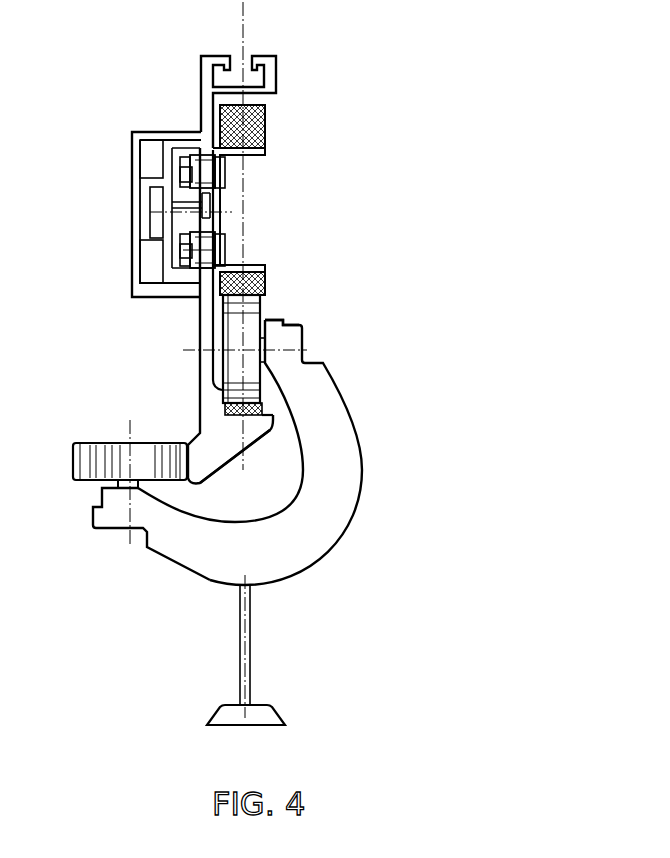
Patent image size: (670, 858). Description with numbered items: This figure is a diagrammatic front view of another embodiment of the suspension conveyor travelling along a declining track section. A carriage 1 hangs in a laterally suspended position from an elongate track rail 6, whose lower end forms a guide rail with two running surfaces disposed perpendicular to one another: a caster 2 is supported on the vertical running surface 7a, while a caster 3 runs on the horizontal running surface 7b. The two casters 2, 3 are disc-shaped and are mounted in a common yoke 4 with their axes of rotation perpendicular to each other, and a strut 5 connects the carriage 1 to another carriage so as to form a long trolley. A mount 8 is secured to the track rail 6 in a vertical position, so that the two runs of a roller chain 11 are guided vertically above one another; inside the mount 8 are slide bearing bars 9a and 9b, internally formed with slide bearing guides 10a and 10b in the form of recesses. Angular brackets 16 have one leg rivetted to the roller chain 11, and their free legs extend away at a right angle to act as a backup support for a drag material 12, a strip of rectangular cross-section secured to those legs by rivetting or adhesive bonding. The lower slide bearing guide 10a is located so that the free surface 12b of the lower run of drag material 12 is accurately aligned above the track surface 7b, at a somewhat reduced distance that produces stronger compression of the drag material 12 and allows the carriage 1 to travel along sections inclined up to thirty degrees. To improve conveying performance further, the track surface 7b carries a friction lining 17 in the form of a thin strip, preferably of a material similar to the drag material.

The carriage 1 is at (360, 528).
The caster 2 is at (98, 458).
The caster 3 is at (237, 340).
The yoke 4 is at (213, 550).
The strut 5 is at (263, 715).
The track rail 6 is at (200, 365).
The running surface 7a is at (188, 443).
The running surface 7b is at (267, 410).
The mount 8 is at (167, 258).
The slide bearing bar 9a is at (200, 235).
The slide bearing bar 9b is at (180, 157).
The slide bearing guide 10a is at (173, 250).
The slide bearing guide 10b is at (220, 160).
The roller chain 11 is at (203, 253).
The drag material 12 is at (265, 118).
The free surface 12b is at (266, 293).
The angular bracket 16 is at (235, 266).
The friction lining 17 is at (263, 402).